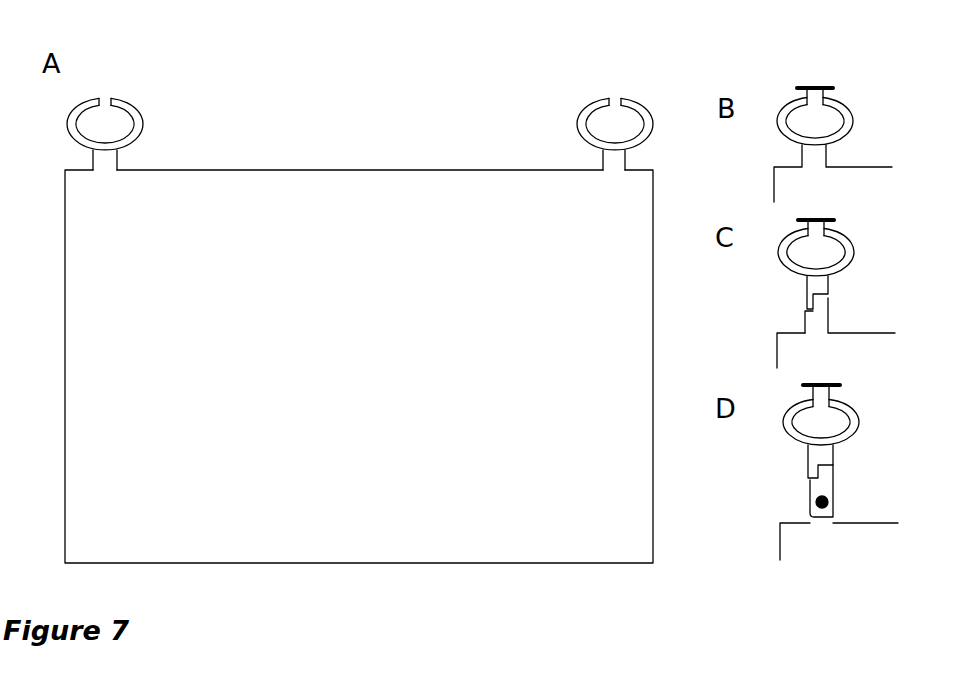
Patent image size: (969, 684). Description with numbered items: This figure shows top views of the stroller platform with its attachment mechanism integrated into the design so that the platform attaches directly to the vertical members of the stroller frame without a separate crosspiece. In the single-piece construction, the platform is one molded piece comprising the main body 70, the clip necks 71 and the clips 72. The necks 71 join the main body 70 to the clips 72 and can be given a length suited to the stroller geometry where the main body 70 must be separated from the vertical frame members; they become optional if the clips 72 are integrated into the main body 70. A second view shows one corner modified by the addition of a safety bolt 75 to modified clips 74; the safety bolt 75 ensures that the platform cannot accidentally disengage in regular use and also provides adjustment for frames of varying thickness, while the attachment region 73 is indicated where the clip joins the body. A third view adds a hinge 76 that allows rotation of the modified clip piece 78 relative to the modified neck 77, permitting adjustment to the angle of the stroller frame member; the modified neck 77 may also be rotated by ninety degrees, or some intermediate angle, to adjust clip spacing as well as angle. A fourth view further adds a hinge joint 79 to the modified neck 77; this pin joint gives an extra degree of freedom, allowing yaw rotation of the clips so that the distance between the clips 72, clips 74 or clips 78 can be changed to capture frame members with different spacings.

The main body 70 is at (292, 223).
The clip necks 71 is at (107, 160).
The clips 72 is at (135, 117).
The base / attachment portion 73 is at (815, 157).
The modified clips 74 is at (842, 105).
The safety bolt 75 is at (798, 83).
The hinge 76 is at (805, 302).
The modified neck 77 is at (818, 323).
The modified clip piece 78 is at (830, 280).
The hinge joint 79 is at (832, 498).